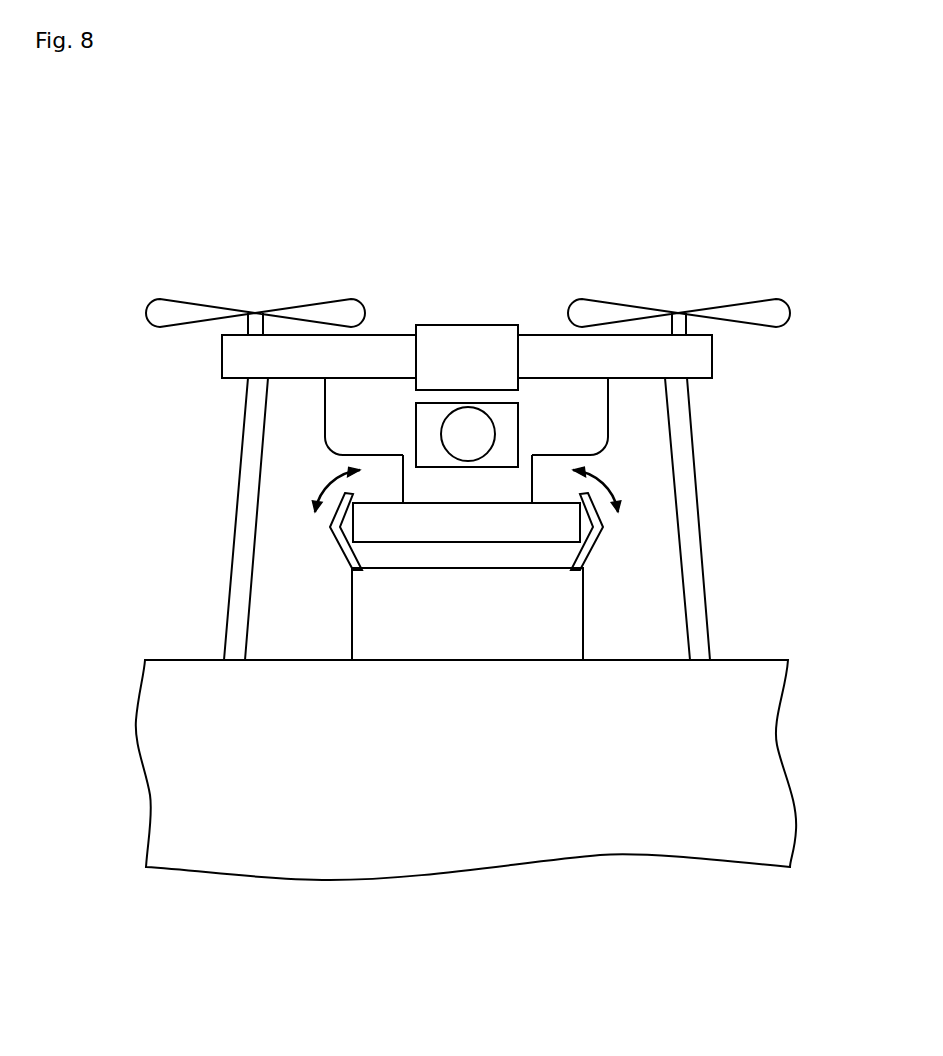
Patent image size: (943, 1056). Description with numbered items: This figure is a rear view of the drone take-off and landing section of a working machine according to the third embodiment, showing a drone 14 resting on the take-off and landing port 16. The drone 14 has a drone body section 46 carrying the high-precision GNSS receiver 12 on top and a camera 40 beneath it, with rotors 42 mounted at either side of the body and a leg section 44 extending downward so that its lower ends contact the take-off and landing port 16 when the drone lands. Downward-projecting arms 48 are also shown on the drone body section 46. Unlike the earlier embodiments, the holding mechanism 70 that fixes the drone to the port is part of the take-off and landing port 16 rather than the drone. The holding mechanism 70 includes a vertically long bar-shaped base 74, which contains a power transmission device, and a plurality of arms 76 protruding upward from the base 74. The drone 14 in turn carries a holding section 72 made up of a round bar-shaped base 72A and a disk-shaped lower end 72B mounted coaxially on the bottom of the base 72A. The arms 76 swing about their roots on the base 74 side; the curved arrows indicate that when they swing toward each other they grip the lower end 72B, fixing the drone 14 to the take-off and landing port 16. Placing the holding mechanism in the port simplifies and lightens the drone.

The high-precision GNSS receiver 12 is at (455, 325).
The drone 14 is at (195, 357).
The take-off and landing port 16 is at (483, 235).
The camera 40 is at (496, 433).
The rotors 42 is at (760, 300).
The leg section 44 is at (710, 580).
The drone body section 46 is at (608, 418).
The arms 48 is at (641, 447).
The holding mechanism 70 is at (472, 531).
The holding section 72 is at (472, 548).
The base 72A is at (400, 477).
The lower end 72B is at (261, 532).
The base 74 is at (352, 617).
The arms 76 is at (332, 532).